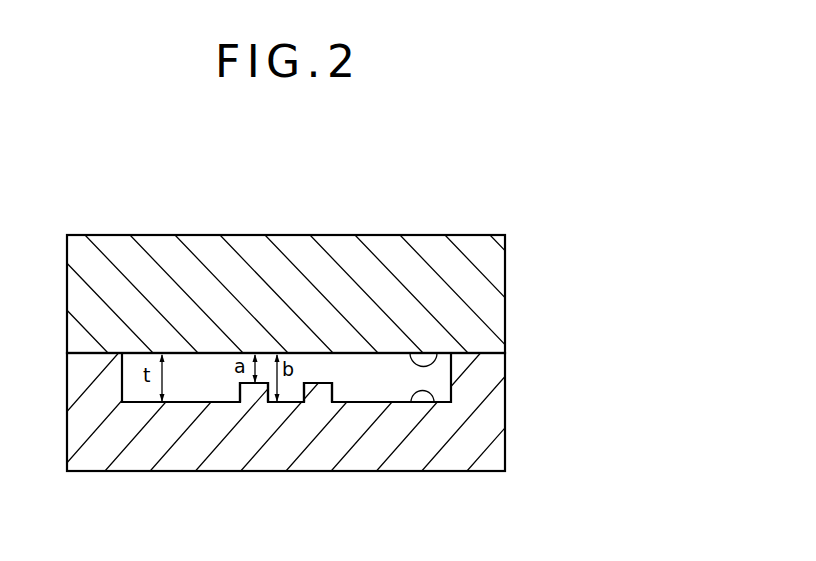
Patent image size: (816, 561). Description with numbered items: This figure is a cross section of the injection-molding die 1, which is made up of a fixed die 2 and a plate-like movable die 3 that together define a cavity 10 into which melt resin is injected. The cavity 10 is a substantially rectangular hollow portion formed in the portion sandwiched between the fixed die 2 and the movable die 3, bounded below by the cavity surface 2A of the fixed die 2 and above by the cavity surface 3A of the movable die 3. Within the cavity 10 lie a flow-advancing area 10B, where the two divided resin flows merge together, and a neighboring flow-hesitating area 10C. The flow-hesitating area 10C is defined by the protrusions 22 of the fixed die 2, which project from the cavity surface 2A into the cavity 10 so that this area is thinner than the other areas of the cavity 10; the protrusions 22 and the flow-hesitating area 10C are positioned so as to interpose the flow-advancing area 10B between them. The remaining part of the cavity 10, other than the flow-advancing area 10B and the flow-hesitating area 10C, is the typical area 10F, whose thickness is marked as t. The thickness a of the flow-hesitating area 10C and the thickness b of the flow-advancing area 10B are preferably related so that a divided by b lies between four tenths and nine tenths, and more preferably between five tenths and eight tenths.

The injection-molding die 1 is at (355, 208).
The fixed die 2 is at (490, 432).
The cavity surface 2A is at (435, 403).
The movable die 3 is at (488, 262).
The cavity surface 3A is at (450, 353).
The cavity 10 is at (437, 375).
The flow-advancing area 10B is at (288, 380).
The flow-hesitating area 10C is at (320, 363).
The typical area 10F is at (202, 377).
The protrusions 22 is at (332, 372).